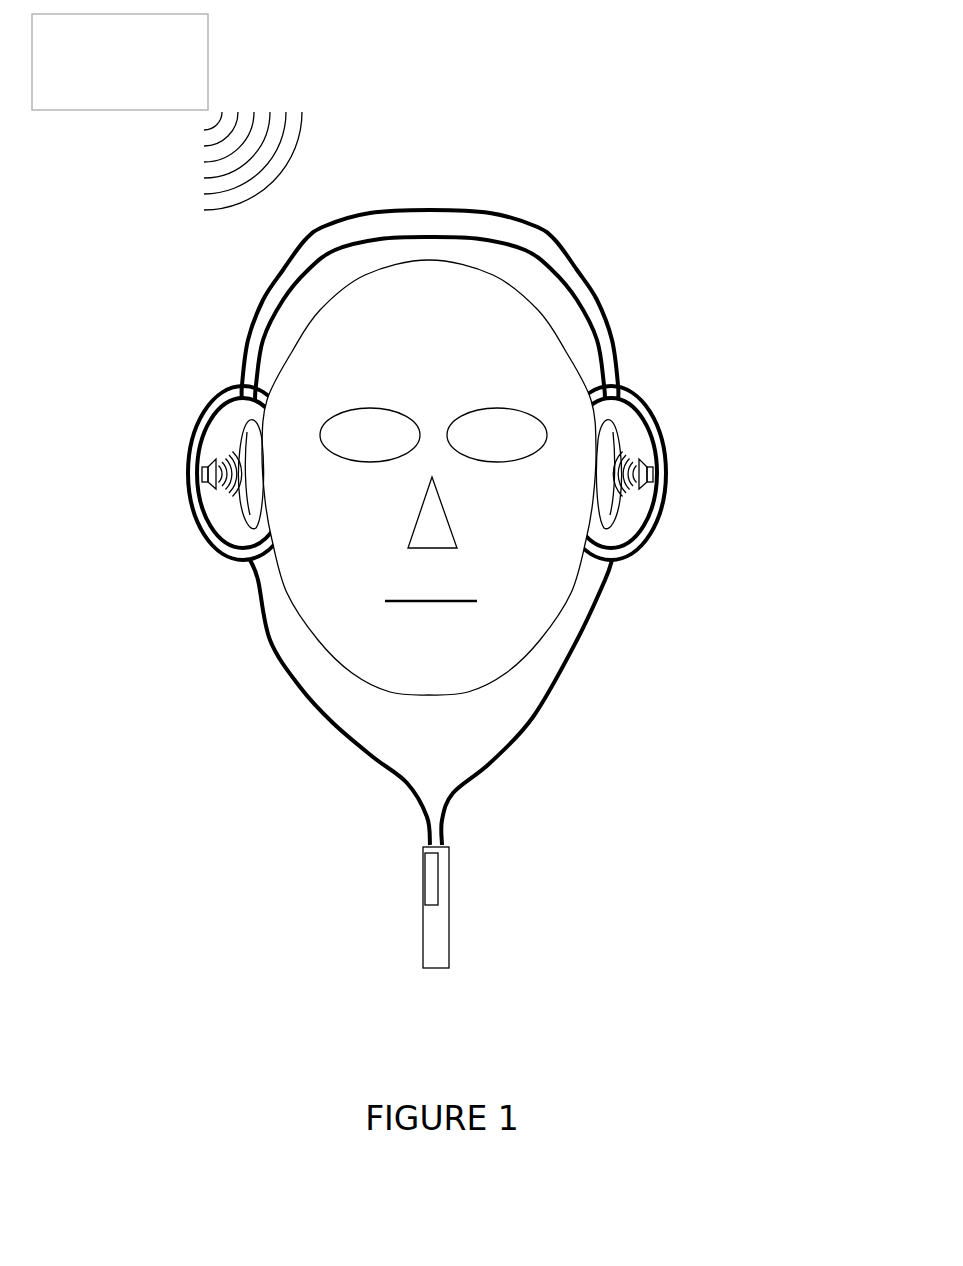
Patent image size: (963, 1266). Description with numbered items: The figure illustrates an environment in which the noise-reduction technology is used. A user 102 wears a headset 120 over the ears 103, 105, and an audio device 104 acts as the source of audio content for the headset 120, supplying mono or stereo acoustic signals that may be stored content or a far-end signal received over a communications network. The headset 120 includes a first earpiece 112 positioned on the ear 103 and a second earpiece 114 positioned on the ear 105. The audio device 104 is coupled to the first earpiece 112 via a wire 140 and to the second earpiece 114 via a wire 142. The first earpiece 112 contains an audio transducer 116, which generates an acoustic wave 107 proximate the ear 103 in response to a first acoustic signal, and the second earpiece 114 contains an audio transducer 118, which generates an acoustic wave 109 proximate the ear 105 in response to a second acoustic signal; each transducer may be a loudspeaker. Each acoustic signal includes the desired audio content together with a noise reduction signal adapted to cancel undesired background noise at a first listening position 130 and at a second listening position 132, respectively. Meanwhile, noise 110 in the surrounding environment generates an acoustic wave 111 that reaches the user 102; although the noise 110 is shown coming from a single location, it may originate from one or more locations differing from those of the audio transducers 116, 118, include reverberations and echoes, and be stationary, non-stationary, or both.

The user 102 is at (430, 697).
The ear 103 is at (247, 523).
The audio device 104 is at (435, 968).
The ear 105 is at (601, 527).
The acoustic wave 107 is at (212, 494).
The acoustic wave 109 is at (644, 492).
The noise 110 is at (102, 84).
The acoustic wave 111 is at (195, 168).
The first earpiece 112 is at (207, 410).
The second earpiece 114 is at (635, 387).
The audio transducer 116 is at (205, 472).
The audio transducer 118 is at (657, 472).
The headset 120 is at (498, 217).
The first listening position 130 is at (264, 487).
The second listening position 132 is at (584, 465).
The wire 140 is at (300, 687).
The wire 142 is at (533, 720).